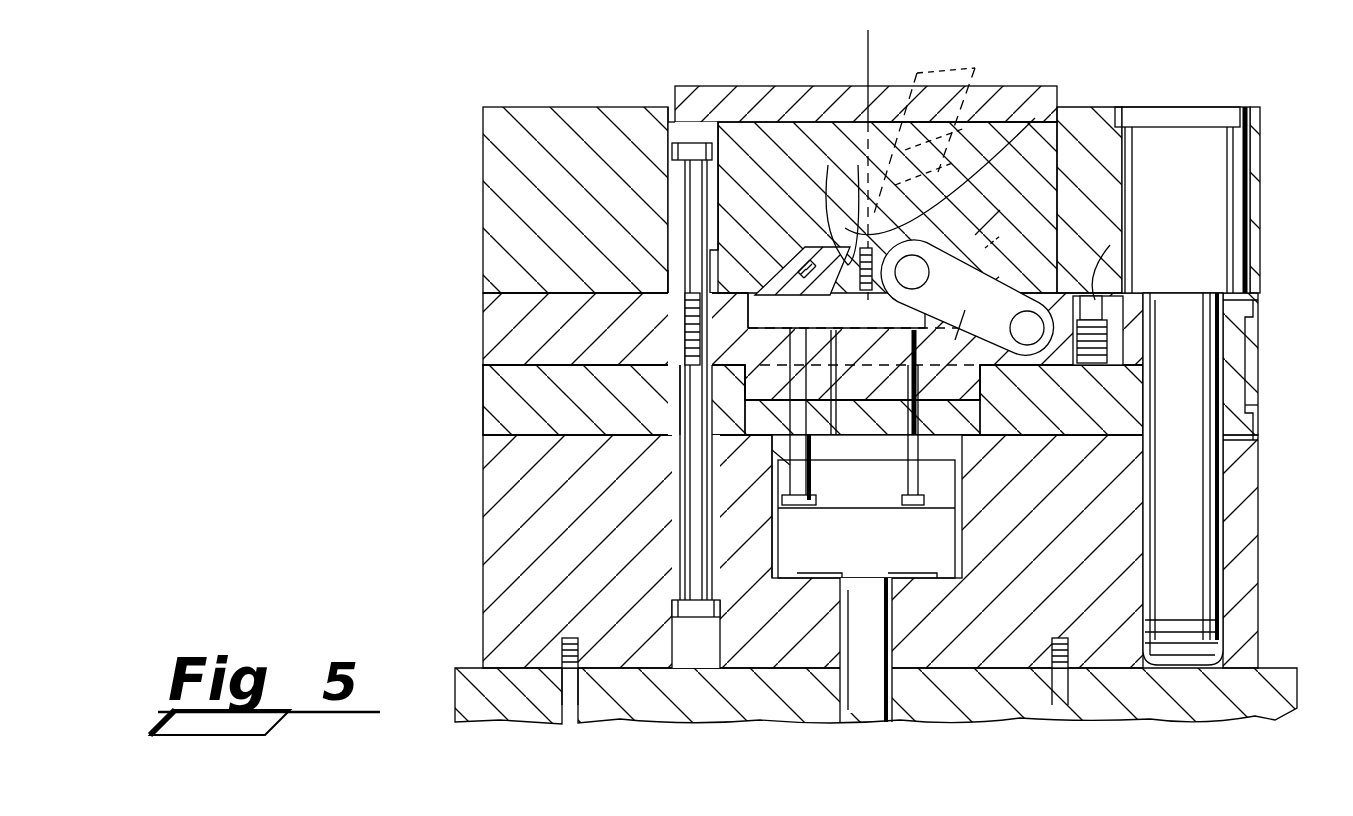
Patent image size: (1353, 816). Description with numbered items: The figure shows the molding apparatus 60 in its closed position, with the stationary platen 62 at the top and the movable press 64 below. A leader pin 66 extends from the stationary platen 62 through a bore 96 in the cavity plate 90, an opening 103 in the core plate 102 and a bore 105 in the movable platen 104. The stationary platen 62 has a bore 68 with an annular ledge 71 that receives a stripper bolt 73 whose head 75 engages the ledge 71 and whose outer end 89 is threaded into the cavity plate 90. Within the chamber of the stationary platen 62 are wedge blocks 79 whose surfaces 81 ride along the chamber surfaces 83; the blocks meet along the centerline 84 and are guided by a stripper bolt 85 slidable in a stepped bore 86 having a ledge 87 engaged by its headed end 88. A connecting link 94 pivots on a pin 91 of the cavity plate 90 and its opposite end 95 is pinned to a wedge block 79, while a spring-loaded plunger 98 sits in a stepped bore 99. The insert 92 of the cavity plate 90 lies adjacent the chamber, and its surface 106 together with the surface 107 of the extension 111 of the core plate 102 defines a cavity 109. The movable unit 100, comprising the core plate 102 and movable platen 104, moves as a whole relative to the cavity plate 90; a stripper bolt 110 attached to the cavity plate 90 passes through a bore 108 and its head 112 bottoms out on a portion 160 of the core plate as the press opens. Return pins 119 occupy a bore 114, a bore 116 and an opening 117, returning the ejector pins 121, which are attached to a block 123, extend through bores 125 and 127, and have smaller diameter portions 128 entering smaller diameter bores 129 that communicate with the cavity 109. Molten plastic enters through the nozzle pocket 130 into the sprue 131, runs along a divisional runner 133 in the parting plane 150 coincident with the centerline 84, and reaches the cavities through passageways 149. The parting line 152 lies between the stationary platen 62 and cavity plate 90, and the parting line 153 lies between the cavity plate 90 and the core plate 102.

The molding apparatus 60 is at (856, 176).
The stationary platen 62 is at (555, 118).
The movable press 64 is at (455, 690).
The leader pin 66 is at (1200, 486).
The bore 68 is at (678, 128).
The annular ledge 71 is at (668, 245).
The stripper bolt 73 is at (700, 205).
The head 75 is at (672, 150).
The wedge block 79 is at (800, 258).
The surface 81 is at (765, 290).
The surface 83 is at (1005, 240).
The centerline 84 is at (868, 70).
The stripper bolt 85 is at (961, 106).
The stepped bore 86 is at (960, 185).
The annular ledge 87 is at (924, 135).
The headed end 88 is at (975, 78).
The outer end 89 is at (680, 280).
The cavity plate 90 is at (492, 320).
The pin 91 is at (1096, 264).
The insert 92 is at (748, 322).
The connecting link 94 is at (976, 289).
The opposite end 95 is at (930, 255).
The bore 96 is at (1245, 325).
The spring-loaded plunger 98 is at (1108, 350).
The stepped bore 99 is at (1118, 322).
The movable unit 100 is at (815, 551).
The core plate 102 is at (490, 398).
The opening 103 is at (1248, 405).
The movable platen 104 is at (500, 548).
The bore 105 is at (1165, 515).
The surface 106 is at (760, 330).
The surface 107 is at (830, 345).
The bore 108 is at (680, 410).
The cavity 109 is at (905, 340).
The stripper bolt 110 is at (649, 387).
The extension 111 is at (830, 450).
The head 112 is at (692, 617).
The bore 114 is at (790, 418).
The bore 116 is at (775, 460).
The opening 117 is at (773, 500).
The return pin 119 is at (800, 505).
The ejector pin 121 is at (925, 510).
The block 123 is at (935, 555).
The bore 125 is at (905, 450).
The bore 127 is at (1014, 319).
The smaller diameter portion 128 is at (1000, 420).
The smaller diameter bore 129 is at (935, 338).
The nozzle pocket 130 is at (780, 135).
The sprue 131 is at (970, 220).
The divisional runner 133 is at (842, 245).
The passageway 149 is at (685, 315).
The parting plane 150 is at (866, 248).
The parting line 152 is at (490, 290).
The parting line 153 is at (490, 365).
The portion 160 is at (675, 495).